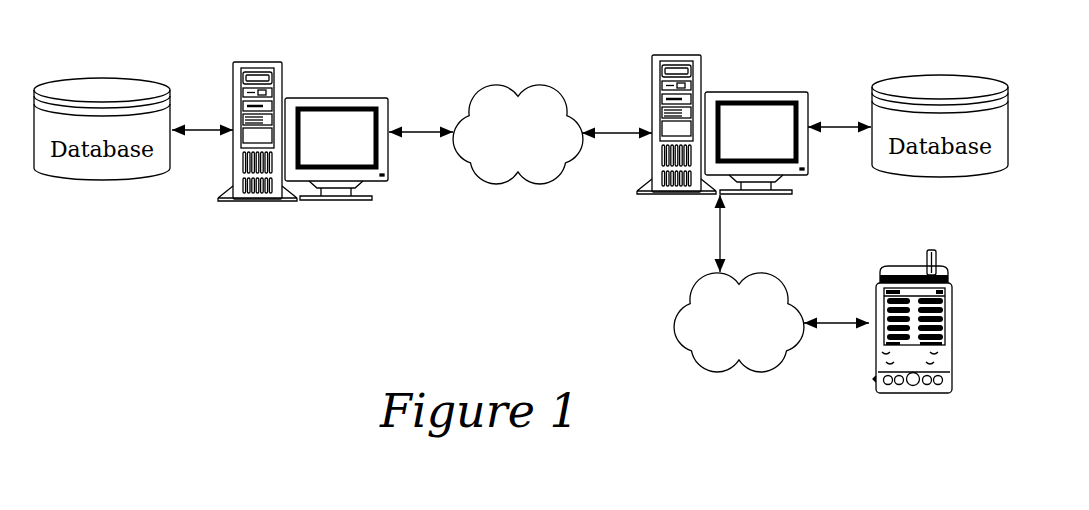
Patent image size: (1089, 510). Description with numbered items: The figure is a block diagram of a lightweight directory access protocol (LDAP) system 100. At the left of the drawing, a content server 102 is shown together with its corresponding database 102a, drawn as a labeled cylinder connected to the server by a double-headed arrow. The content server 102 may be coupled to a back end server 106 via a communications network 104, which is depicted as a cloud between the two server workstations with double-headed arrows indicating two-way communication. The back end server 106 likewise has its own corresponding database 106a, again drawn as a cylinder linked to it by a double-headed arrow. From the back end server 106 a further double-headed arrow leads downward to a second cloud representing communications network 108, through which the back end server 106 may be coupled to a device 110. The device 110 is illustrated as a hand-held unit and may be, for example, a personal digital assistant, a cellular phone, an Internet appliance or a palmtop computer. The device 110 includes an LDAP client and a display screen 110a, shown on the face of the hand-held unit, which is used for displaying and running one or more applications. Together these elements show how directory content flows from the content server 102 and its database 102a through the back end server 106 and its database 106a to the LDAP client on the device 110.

The LDAP system 100 is at (107, 336).
The content server 102 is at (336, 98).
The database 102a is at (101, 78).
The communications network 104 is at (532, 88).
The back end server 106 is at (754, 92).
The database 106a is at (938, 75).
The communications network 108 is at (751, 274).
The device 110 is at (955, 318).
The display screen 110a is at (945, 322).